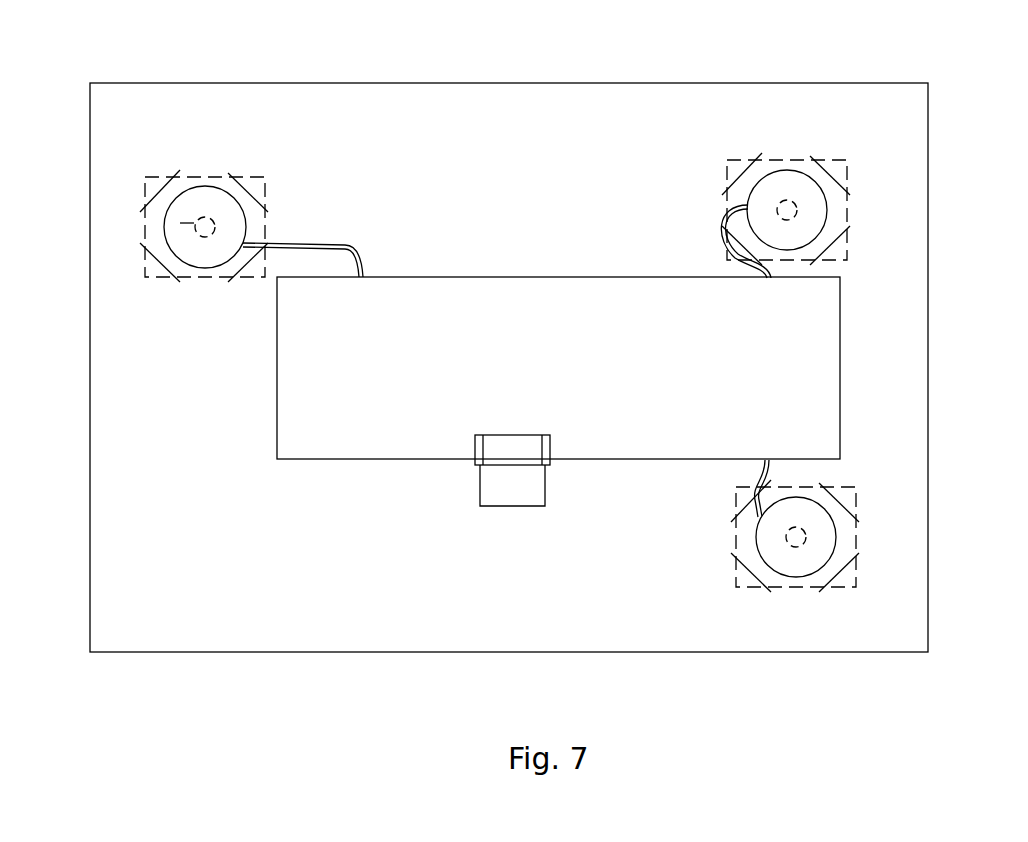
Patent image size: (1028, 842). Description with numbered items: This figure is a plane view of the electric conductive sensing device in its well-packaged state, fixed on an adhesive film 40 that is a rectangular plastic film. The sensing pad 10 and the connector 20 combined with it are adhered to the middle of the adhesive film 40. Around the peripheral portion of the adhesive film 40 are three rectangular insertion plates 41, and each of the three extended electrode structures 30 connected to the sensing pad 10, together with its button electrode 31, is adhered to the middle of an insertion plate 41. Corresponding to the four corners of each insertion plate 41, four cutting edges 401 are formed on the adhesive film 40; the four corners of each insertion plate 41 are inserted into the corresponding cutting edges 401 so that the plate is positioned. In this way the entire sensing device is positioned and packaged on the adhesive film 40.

The sensing pad 10 is at (357, 470).
The connector 20 is at (512, 532).
The extended electrode structure 30 is at (222, 174).
The button electrode 31 is at (163, 225).
The adhesive film 40 is at (912, 142).
The insertion plate 41 is at (253, 177).
The cutting edge 401 is at (178, 193).